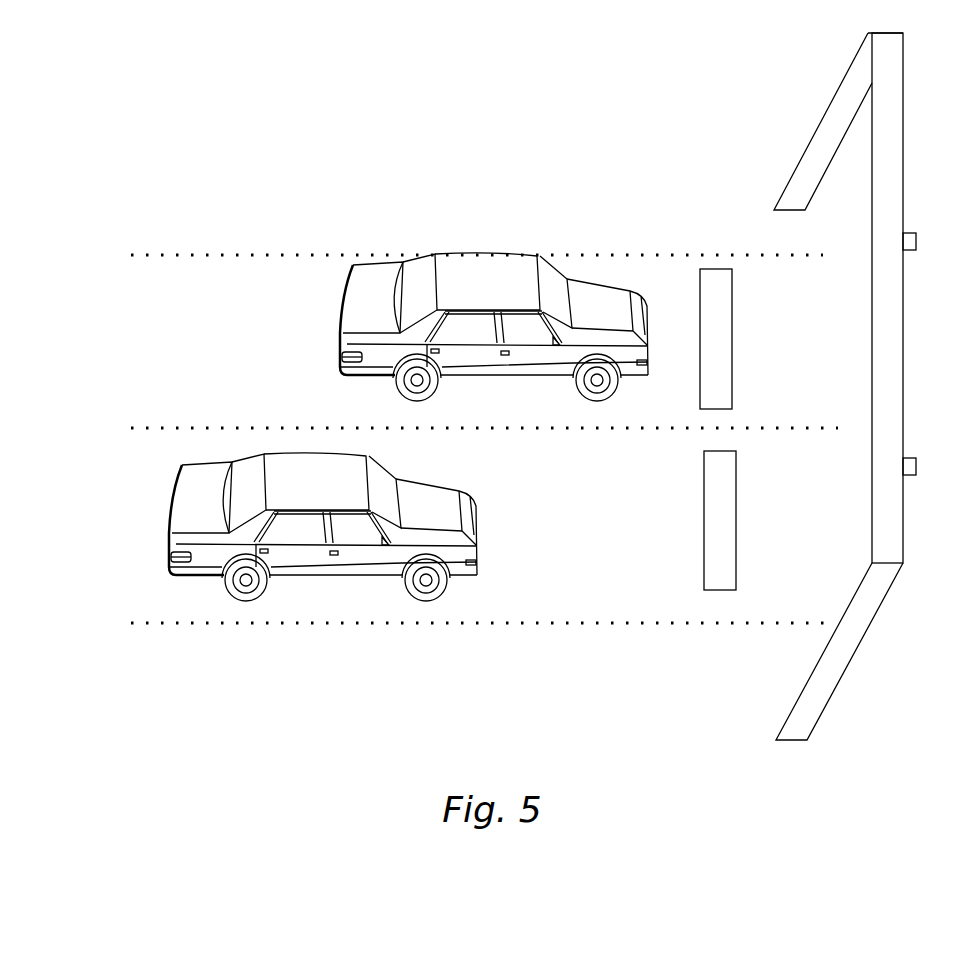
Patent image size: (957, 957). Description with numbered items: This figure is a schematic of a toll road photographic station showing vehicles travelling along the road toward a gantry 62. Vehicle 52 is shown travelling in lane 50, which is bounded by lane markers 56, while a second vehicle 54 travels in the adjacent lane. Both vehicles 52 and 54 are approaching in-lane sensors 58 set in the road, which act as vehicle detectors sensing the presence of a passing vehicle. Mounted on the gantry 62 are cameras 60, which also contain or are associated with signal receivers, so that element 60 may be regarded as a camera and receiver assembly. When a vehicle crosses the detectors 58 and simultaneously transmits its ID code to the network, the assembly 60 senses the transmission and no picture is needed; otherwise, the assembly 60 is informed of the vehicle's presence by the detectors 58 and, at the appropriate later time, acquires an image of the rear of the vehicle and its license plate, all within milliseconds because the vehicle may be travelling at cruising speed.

The lane 50 is at (223, 359).
The vehicle 52 is at (502, 283).
The vehicle 54 is at (447, 490).
The lane markers 56 is at (642, 252).
The in-lane sensors 58 is at (714, 522).
The camera and receiver assembly 60 is at (914, 233).
The gantry 62 is at (903, 345).